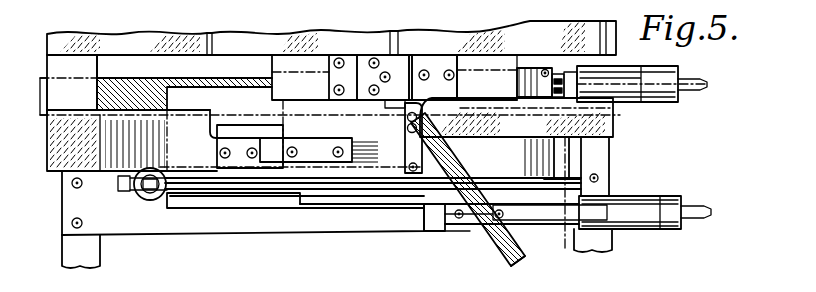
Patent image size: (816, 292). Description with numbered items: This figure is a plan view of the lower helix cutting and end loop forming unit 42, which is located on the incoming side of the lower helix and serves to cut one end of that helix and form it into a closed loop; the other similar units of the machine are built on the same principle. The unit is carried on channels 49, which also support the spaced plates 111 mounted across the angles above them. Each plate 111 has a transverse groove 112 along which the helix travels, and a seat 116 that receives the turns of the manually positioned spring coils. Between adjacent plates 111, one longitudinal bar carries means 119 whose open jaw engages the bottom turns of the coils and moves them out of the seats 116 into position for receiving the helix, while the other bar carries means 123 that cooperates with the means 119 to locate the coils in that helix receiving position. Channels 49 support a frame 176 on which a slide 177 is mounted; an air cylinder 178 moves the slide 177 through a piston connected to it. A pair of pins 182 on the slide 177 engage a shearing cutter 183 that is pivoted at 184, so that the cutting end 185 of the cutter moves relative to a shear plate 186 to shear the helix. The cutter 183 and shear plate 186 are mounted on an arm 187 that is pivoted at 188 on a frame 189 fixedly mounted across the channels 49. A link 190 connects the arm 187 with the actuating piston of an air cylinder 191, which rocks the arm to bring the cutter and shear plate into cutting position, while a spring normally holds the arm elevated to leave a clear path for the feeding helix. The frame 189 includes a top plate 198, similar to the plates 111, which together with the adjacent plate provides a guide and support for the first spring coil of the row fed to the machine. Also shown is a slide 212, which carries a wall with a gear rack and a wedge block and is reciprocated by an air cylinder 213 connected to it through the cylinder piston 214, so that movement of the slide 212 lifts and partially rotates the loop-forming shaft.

The plate 111 is at (150, 24).
The transverse groove 112 is at (396, 32).
The seat 116 is at (262, 43).
The means for engaging bottom turns 119 is at (367, 48).
The means for locating spring coils 123 is at (465, 58).
The shear plate 186 is at (434, 76).
The slide 212 is at (523, 73).
The cylinder piston 214 is at (563, 85).
The air cylinder 213 is at (660, 102).
The cutting end 185 is at (402, 112).
The pivot 184 is at (445, 127).
The top plate 198 is at (62, 160).
The air cylinder 191 is at (136, 192).
The link 190 is at (149, 201).
The frame 189 is at (191, 204).
The pivot 188 is at (272, 172).
The arm 187 is at (348, 175).
The lower helix cutting and end loop forming unit 42 is at (310, 232).
The frame 176 is at (442, 232).
The pins 182 is at (496, 220).
The shearing cutter 183 is at (508, 263).
The slide 177 is at (537, 214).
The air cylinder 178 is at (661, 226).
The channels 49 is at (80, 268).